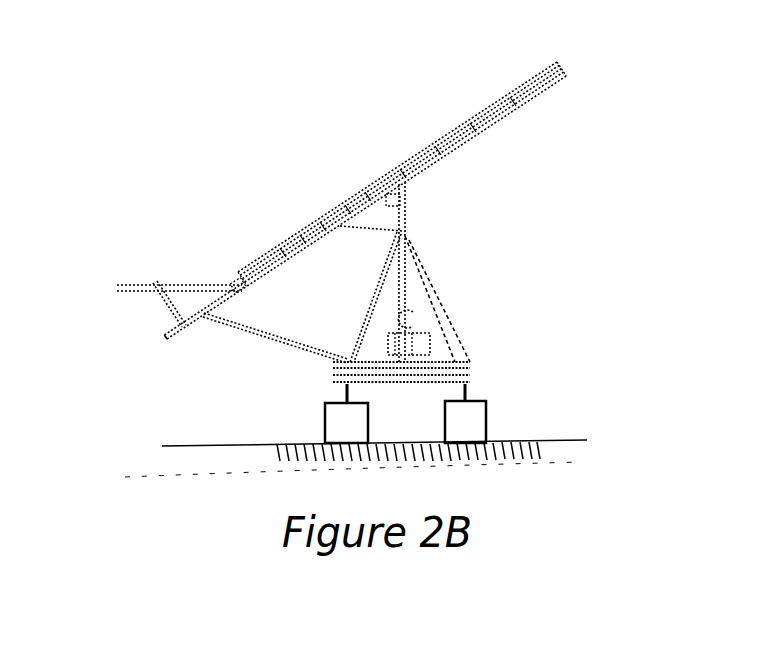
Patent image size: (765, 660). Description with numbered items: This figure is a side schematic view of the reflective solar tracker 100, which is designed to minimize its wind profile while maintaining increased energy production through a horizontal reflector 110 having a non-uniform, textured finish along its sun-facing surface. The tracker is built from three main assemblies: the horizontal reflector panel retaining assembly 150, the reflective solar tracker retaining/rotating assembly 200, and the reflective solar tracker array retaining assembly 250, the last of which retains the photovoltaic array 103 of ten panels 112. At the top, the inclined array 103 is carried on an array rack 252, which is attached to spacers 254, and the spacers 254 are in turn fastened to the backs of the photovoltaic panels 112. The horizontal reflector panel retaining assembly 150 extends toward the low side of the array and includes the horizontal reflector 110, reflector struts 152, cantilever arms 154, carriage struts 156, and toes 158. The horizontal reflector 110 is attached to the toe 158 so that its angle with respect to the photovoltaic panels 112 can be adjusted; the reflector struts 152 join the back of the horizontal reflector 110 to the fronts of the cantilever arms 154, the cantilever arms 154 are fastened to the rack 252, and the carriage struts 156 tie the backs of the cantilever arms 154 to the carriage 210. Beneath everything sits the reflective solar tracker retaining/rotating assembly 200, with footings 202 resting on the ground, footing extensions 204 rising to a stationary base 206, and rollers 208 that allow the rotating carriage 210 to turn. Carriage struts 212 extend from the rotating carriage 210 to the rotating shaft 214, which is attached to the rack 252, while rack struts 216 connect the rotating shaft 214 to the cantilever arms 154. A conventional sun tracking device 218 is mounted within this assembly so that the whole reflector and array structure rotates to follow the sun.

The reflective solar tracker 100 is at (342, 110).
The photovoltaic (PV) array 103 is at (270, 141).
The horizontal reflector 110 is at (147, 287).
The photovoltaic panel 112 is at (460, 122).
The horizontal reflector panel retaining assembly 150 is at (171, 218).
The reflector strut 152 is at (165, 315).
The cantilever arm 154 is at (187, 335).
The carriage strut 156 is at (267, 343).
The toe 158 is at (237, 286).
The reflective solar tracker retaining/rotating assembly 200 is at (590, 418).
The footing 202 is at (486, 422).
The footing extension 204 is at (467, 393).
The stationary base 206 is at (470, 382).
The roller 208 is at (468, 372).
The rotating carriage 210 is at (465, 365).
The carriage strut 212 is at (432, 305).
The rotating shaft 214 is at (408, 297).
The rack strut 216 is at (362, 294).
The sun tracking device 218 is at (427, 343).
The reflective solar tracker array retaining assembly 250 is at (572, 167).
The array rack 252 is at (492, 126).
The spacer 254 is at (533, 86).